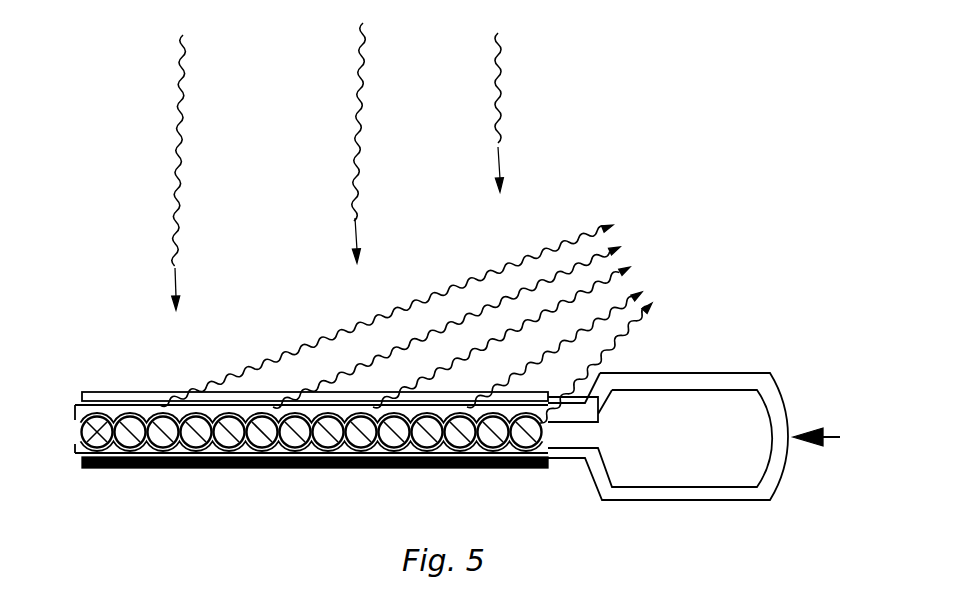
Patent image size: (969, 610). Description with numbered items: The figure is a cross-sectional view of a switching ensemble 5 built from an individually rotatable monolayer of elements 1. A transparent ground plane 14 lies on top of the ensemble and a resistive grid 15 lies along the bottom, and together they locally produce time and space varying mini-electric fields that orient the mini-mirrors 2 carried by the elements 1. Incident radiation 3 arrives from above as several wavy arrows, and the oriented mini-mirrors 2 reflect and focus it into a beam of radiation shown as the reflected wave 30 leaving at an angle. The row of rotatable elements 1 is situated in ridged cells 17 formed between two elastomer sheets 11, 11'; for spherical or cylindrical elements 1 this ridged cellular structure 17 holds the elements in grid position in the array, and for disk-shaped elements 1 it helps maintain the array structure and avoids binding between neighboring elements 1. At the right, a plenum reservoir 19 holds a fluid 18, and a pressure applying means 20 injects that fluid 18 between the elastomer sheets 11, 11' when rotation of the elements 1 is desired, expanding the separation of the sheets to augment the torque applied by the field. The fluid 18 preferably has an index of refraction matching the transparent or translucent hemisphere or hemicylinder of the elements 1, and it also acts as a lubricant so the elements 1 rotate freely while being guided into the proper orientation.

The rotatable elements 1 is at (36, 440).
The mini-mirrors 2 is at (90, 436).
The incident radiation 3 is at (175, 157).
The switching ensemble 5 is at (125, 492).
The elastomer sheets 11 is at (591, 453).
The elastomer sheets 11' is at (594, 415).
The transparent ground plane 14 is at (437, 407).
The resistive grid 15 is at (477, 472).
The ridged cells 17 is at (410, 450).
The fluid 18 is at (665, 465).
The plenum reservoir 19 is at (663, 403).
The pressure applying means 20 is at (836, 439).
The reflected wave 30 is at (413, 340).